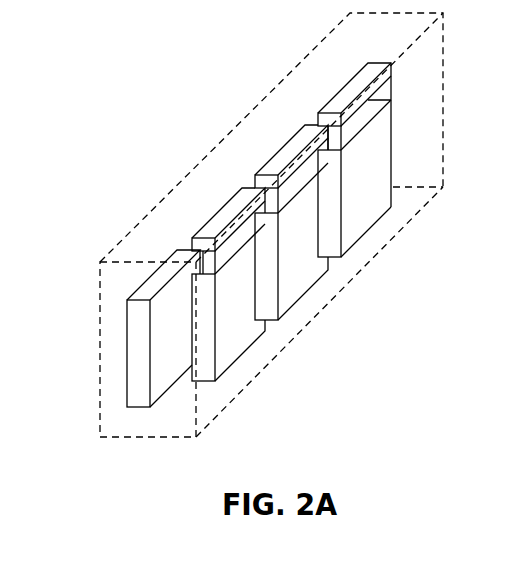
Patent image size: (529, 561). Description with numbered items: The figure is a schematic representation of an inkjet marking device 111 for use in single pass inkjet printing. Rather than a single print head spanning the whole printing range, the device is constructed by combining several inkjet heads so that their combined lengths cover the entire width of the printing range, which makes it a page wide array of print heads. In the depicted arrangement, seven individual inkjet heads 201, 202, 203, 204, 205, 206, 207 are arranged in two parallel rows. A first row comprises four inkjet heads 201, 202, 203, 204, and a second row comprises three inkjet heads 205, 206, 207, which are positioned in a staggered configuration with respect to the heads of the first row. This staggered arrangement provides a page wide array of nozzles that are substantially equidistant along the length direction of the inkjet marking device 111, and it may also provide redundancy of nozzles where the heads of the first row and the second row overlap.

The inkjet marking device 111 is at (352, 308).
The inkjet head 201 is at (150, 280).
The inkjet head 202 is at (215, 223).
The inkjet head 203 is at (290, 147).
The inkjet head 204 is at (353, 77).
The inkjet head 205 is at (235, 350).
The inkjet head 206 is at (310, 243).
The inkjet head 207 is at (370, 173).